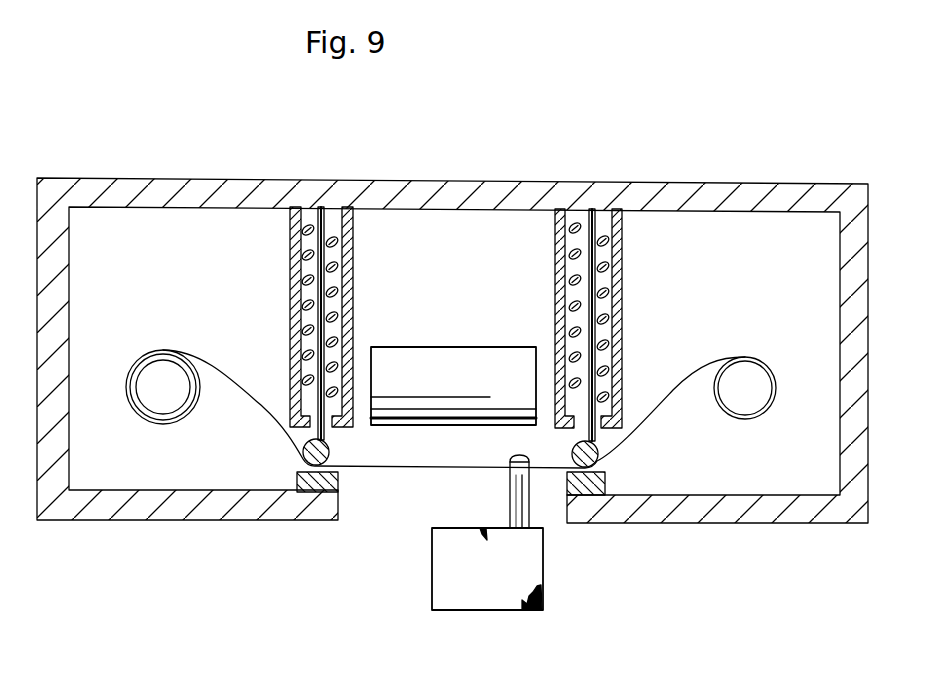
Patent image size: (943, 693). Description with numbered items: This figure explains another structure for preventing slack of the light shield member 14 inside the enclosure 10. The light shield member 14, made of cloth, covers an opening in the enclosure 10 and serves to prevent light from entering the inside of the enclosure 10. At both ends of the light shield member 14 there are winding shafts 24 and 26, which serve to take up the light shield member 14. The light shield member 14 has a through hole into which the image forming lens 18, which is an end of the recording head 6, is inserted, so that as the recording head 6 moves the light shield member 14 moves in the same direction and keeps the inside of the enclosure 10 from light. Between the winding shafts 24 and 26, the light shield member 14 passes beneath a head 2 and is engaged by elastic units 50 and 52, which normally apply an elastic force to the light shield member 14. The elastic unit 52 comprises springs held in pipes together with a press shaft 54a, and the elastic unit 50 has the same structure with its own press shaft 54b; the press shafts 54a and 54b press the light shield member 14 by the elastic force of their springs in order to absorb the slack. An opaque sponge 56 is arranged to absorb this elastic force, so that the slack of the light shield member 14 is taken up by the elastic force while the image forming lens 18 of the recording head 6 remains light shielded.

The enclosure 10 is at (805, 183).
The elastic unit 50 is at (280, 418).
The elastic unit 52 is at (634, 425).
The thermal head / recording element 2 is at (490, 358).
The press shaft 54a is at (573, 450).
The press shaft 54b is at (331, 450).
The light shield member 14 is at (250, 407).
The winding shaft 24 is at (158, 400).
The winding shaft 26 is at (745, 405).
The opaque sponge 56 is at (340, 478).
The image forming lens 18 is at (512, 497).
The recording head 6 is at (481, 598).